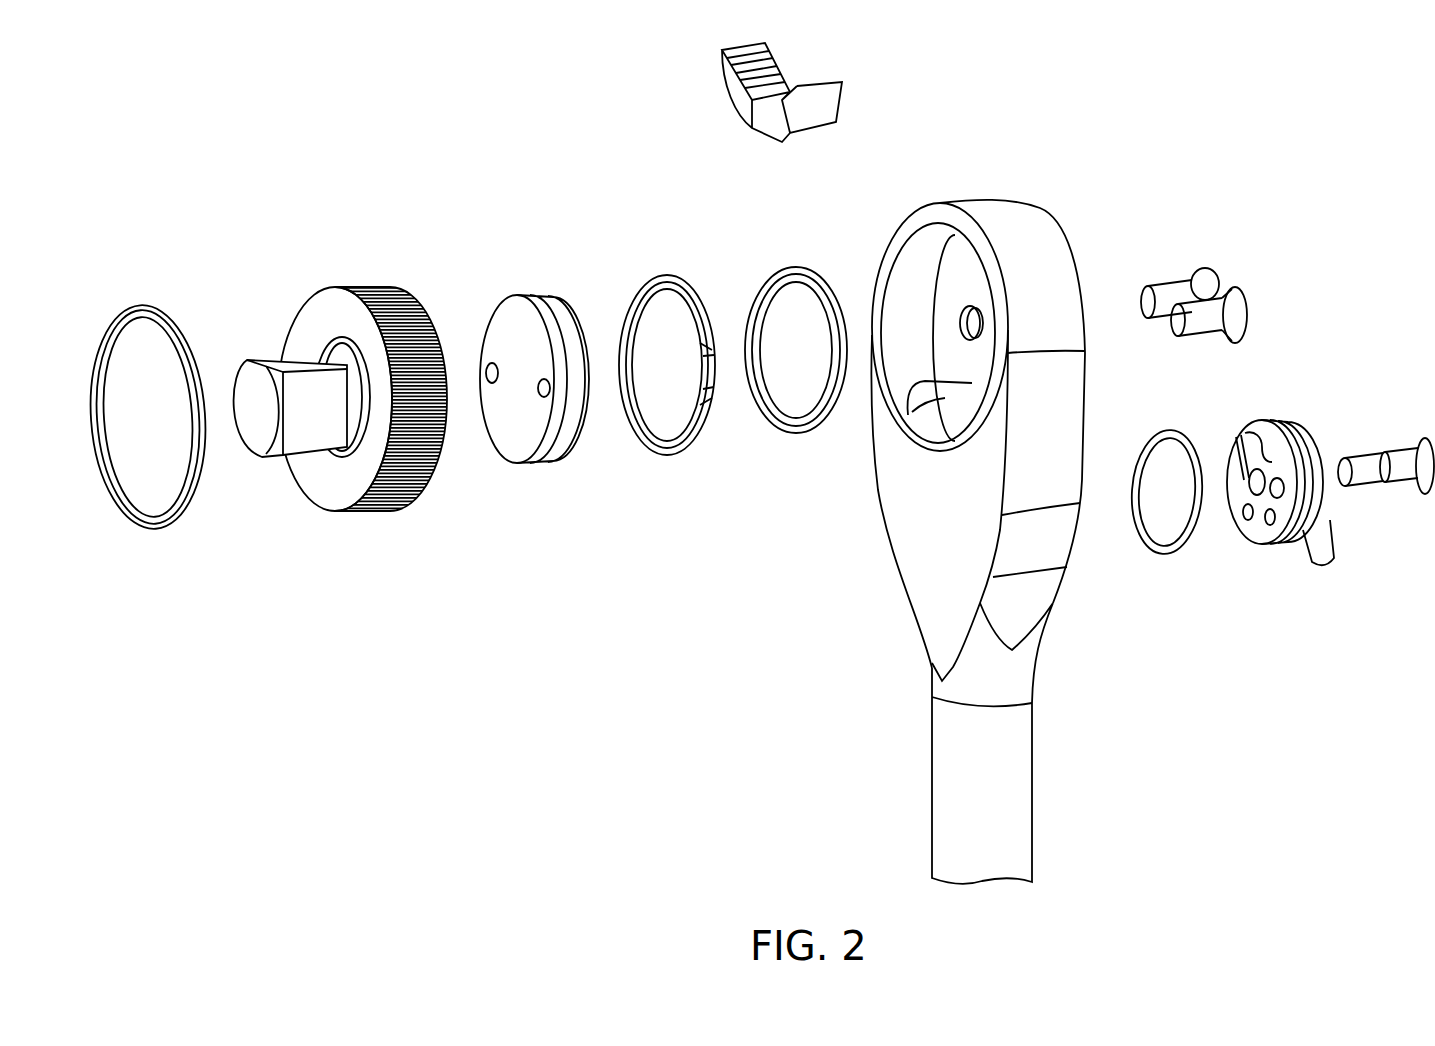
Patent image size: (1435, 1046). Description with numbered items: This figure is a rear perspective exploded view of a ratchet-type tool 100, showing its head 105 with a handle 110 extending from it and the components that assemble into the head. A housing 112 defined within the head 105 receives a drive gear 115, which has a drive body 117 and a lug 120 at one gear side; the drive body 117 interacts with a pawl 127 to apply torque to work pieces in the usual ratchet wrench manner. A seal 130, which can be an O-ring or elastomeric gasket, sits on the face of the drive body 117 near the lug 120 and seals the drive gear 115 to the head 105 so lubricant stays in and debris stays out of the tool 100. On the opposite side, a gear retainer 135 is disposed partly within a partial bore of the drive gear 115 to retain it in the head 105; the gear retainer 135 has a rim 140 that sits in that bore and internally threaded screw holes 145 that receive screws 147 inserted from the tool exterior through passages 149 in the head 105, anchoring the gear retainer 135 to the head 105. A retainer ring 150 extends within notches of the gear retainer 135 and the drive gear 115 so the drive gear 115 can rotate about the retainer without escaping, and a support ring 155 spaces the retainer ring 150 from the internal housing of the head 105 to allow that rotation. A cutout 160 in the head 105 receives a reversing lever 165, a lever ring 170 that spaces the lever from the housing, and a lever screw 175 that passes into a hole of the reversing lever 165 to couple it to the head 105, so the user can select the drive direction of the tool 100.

The tool 100 is at (1330, 145).
The head 105 is at (1043, 248).
The handle 110 is at (952, 808).
The housing 112 is at (963, 382).
The drive gear 115 is at (296, 485).
The drive body 117 is at (372, 282).
The lug 120 is at (248, 388).
The pawl 127 is at (817, 100).
The seal 130 is at (136, 303).
The gear retainer 135 is at (578, 318).
The rim 140 is at (517, 335).
The screw holes 145 is at (492, 385).
The screws 147 is at (1203, 285).
The passages 149 is at (968, 310).
The retainer ring 150 is at (671, 277).
The support ring 155 is at (762, 430).
The cutout 160 is at (856, 572).
The reversing lever 165 is at (1313, 547).
The lever ring 170 is at (1165, 553).
The lever screw 175 is at (1410, 473).